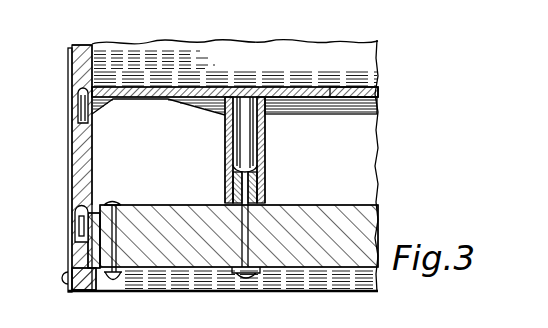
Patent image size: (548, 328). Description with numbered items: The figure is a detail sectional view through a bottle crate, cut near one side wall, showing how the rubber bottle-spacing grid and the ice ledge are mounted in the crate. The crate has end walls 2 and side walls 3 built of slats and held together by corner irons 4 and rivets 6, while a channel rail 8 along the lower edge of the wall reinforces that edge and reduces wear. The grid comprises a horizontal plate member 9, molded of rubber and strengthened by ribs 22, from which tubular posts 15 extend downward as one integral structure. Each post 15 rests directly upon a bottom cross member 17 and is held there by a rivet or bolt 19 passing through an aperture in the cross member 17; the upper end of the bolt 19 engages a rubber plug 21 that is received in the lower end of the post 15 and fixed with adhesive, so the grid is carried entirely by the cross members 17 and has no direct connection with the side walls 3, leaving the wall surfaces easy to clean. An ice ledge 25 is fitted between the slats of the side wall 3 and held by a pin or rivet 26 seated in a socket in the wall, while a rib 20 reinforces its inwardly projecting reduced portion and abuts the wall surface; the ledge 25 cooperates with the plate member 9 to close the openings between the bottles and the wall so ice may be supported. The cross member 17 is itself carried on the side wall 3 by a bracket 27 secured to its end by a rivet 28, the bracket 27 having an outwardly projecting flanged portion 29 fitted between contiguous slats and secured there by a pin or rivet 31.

The end wall 2 is at (338, 47).
The side wall 3 is at (69, 58).
The corner iron 4 is at (70, 163).
The rivet 6 is at (62, 278).
The channel rail 8 is at (85, 293).
The horizontal plate member 9 is at (357, 89).
The tubular post 15 is at (267, 152).
The cross member 17 is at (378, 216).
The rivet or bolt 19 is at (246, 232).
The rib 20 is at (100, 111).
The plug 21 is at (266, 187).
The rib 22 is at (362, 116).
The ice ledge 25 is at (118, 87).
The pin or rivet 26 is at (82, 107).
The bracket 27 is at (90, 247).
The rivet 28 is at (114, 226).
The flanged portion 29 is at (77, 213).
The pin or rivet 31 is at (78, 230).